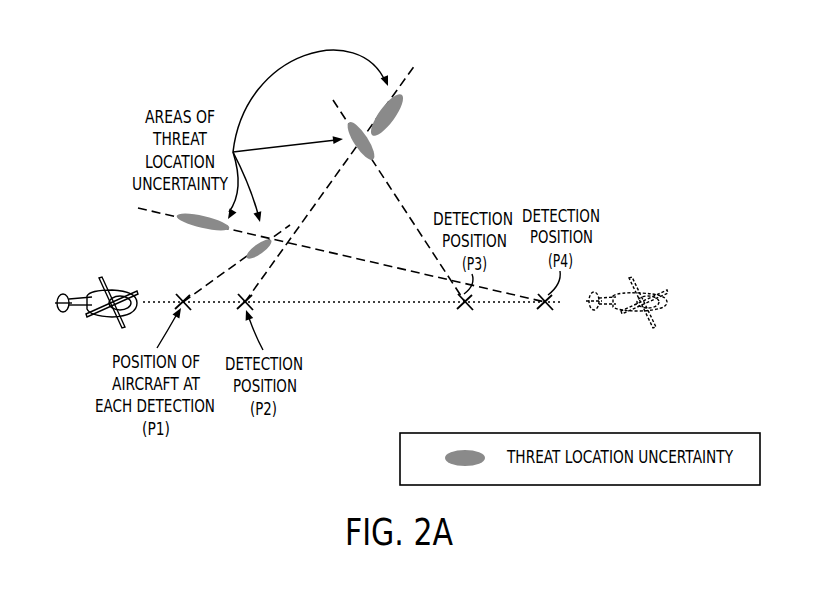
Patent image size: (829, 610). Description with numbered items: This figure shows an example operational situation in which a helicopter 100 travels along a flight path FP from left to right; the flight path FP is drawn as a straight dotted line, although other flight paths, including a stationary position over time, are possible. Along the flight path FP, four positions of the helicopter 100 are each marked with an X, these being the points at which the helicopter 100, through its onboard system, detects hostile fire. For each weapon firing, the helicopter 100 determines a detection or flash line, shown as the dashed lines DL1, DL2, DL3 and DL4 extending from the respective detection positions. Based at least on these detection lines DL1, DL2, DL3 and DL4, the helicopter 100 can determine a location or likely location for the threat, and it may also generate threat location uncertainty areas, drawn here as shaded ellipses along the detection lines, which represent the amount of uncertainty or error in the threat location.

The helicopter 100 is at (95, 297).
The detection line DL1 is at (225, 273).
The detection line DL2 is at (403, 84).
The detection line DL3 is at (343, 102).
The detection line DL4 is at (178, 218).
The flight path FP is at (488, 305).